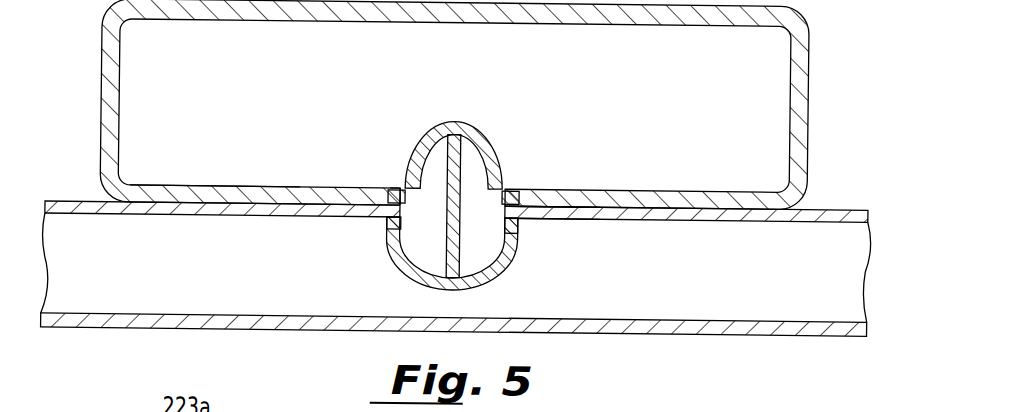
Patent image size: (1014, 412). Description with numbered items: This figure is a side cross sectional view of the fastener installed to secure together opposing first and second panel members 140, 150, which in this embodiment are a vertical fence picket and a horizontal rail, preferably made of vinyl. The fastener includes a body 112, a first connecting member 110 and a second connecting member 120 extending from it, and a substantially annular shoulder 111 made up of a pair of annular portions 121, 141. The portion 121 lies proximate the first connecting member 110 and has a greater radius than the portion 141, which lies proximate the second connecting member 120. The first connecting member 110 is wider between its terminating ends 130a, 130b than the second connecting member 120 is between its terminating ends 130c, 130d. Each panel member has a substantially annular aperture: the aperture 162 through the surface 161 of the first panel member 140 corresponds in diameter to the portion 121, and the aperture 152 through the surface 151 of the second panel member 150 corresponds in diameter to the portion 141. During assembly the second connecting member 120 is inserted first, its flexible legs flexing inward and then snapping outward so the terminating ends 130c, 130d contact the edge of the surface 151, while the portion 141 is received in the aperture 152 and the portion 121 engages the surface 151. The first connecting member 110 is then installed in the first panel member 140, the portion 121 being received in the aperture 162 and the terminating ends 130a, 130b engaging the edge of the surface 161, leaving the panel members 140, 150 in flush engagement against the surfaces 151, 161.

The first connecting member 110 is at (455, 183).
The shoulder 111 is at (425, 214).
The body 112 is at (436, 261).
The second connecting member 120 is at (489, 117).
The annular portion of the shoulder 121 is at (388, 186).
The terminating end 130a is at (392, 214).
The terminating end 130b is at (520, 219).
The terminating end 130c is at (400, 178).
The terminating end 130d is at (503, 181).
The first panel member 140 is at (806, 328).
The annular portion of the shoulder 141 is at (400, 182).
The second panel member 150 is at (795, 37).
The surface of the second panel member 151 is at (182, 194).
The aperture 152 is at (503, 184).
The surface of the first panel member 161 is at (828, 200).
The aperture 162 is at (522, 212).